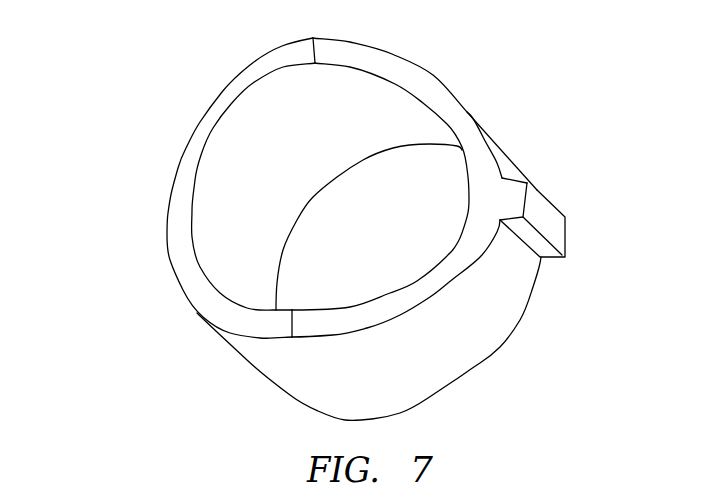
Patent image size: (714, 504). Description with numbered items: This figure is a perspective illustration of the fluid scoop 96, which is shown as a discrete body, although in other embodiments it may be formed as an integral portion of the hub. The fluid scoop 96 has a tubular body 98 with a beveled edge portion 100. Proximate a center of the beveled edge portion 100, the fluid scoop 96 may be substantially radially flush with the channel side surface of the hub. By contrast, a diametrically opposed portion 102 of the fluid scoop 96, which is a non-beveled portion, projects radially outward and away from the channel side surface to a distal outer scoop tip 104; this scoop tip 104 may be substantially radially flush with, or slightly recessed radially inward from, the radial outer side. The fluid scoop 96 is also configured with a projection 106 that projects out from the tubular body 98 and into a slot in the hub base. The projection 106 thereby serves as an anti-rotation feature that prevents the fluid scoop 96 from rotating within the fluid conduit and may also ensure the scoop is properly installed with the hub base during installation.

The fluid scoop 96 is at (538, 95).
The tubular body 98 is at (502, 352).
The beveled edge portion 100 is at (505, 173).
The diametrically opposed portion 102 is at (149, 276).
The distal outer scoop tip 104 is at (178, 196).
The projection 106 is at (548, 223).